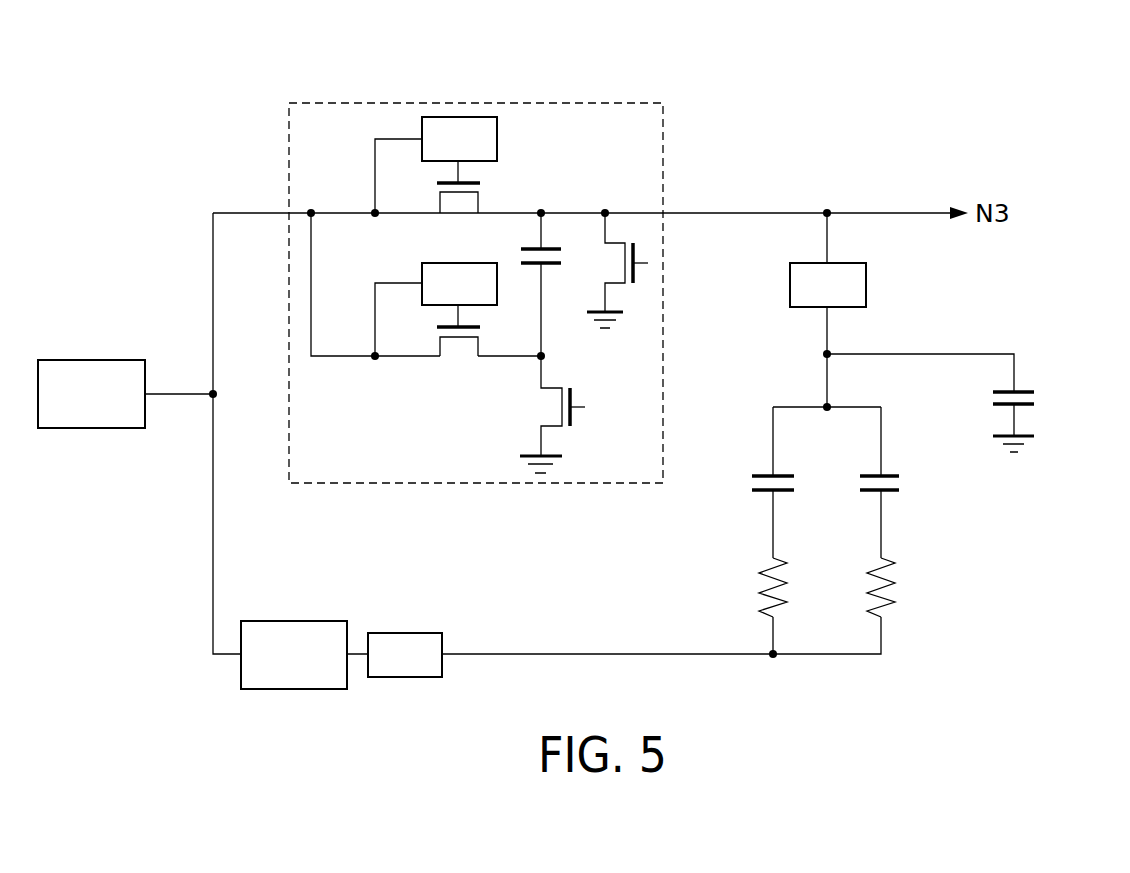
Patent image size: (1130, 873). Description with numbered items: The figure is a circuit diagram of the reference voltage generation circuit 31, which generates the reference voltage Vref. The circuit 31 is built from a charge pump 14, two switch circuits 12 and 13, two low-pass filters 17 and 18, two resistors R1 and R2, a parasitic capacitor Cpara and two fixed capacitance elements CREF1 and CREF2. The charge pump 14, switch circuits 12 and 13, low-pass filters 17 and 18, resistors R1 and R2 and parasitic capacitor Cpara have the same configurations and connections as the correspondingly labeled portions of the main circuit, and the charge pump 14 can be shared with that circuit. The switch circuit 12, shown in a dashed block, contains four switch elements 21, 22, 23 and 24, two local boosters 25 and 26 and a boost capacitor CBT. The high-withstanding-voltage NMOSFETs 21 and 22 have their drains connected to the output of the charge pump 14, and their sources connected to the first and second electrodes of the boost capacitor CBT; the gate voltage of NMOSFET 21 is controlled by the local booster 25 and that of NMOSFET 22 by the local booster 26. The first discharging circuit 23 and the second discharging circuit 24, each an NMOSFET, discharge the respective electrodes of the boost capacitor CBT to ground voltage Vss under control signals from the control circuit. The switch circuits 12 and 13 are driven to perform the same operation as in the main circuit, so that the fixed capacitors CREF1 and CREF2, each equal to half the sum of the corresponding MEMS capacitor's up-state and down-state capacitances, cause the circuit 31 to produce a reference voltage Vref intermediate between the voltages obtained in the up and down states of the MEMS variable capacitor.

The switch circuit 12 is at (380, 103).
The switch circuit 13 is at (293, 621).
The charge pump 14 is at (93, 360).
The low-pass filter 17 is at (866, 286).
The low-pass filter 18 is at (407, 633).
The switch element (NMOSFET) 21 is at (480, 198).
The switch element (NMOSFET) 22 is at (455, 358).
The first discharging circuit 23 is at (605, 268).
The second discharging circuit 24 is at (578, 420).
The local booster 25 is at (497, 139).
The local booster 26 is at (422, 273).
The reference voltage generation circuit 31 is at (617, 53).
The boost capacitor CBT is at (517, 255).
The fixed capacitance element CREF1 is at (779, 482).
The fixed capacitance element CREF2 is at (917, 482).
The parasitic capacitor Cpara is at (966, 403).
The resistor R1 is at (756, 583).
The resistor R2 is at (893, 590).